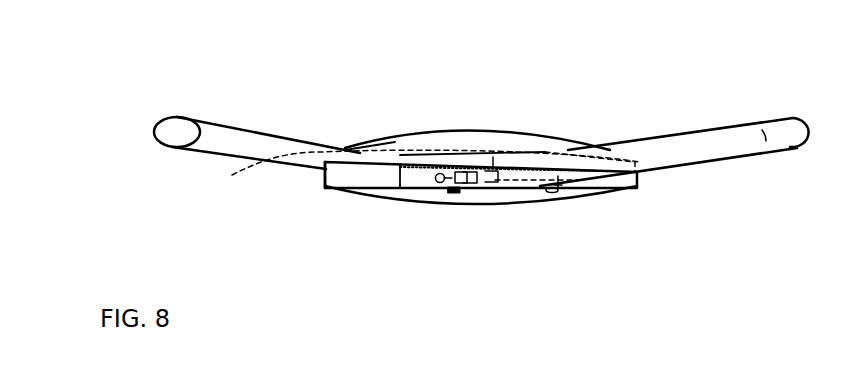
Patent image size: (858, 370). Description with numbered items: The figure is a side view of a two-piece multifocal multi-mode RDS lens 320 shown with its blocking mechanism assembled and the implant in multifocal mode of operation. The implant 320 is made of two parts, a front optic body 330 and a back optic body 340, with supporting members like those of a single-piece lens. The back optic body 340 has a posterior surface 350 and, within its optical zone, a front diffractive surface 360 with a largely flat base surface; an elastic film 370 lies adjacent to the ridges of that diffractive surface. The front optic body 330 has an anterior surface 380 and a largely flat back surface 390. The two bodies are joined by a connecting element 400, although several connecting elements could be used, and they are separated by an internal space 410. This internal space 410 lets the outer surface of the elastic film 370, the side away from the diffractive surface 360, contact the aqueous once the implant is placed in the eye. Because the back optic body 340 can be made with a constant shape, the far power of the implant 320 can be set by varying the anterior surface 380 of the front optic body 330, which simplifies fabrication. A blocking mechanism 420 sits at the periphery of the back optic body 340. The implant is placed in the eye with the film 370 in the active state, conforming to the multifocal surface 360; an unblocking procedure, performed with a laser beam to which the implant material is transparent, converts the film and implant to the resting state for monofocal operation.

The two-piece multifocal multi-mode RDS lens 320 is at (762, 93).
The front optic body 330 is at (472, 132).
The back optic body 340 is at (640, 182).
The posterior surface 350 is at (598, 198).
The front diffractive surface 360 is at (406, 172).
The elastic film 370 is at (363, 166).
The anterior surface 380 is at (392, 135).
The back surface 390 is at (555, 150).
The connecting element 400 is at (385, 164).
The internal space 410 is at (232, 175).
The blocking mechanism 420 is at (480, 197).